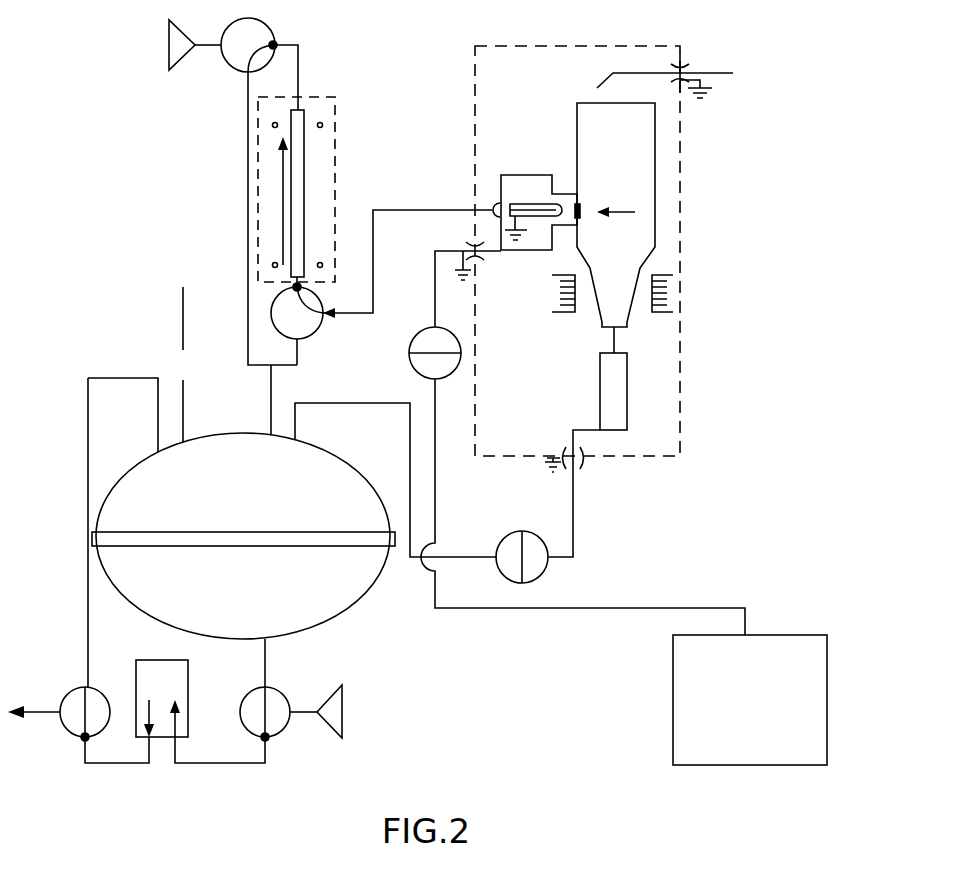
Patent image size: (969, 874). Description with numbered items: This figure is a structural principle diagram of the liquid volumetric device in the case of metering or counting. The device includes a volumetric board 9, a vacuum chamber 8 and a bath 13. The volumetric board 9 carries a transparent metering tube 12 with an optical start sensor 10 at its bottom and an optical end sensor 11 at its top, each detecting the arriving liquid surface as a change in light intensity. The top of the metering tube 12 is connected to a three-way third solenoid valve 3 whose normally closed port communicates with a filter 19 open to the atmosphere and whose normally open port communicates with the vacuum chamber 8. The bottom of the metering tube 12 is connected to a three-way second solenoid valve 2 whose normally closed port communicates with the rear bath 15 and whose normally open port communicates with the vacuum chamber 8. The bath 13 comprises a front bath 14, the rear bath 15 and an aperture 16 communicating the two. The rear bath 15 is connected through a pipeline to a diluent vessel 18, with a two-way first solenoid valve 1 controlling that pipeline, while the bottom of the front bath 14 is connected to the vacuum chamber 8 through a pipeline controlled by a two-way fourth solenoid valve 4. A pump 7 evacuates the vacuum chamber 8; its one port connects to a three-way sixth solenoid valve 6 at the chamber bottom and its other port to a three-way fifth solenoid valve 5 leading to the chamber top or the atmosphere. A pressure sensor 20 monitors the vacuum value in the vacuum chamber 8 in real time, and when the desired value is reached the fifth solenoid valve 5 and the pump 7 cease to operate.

The first solenoid valve 1 is at (435, 353).
The second solenoid valve 2 is at (315, 324).
The third solenoid valve 3 is at (242, 54).
The fourth solenoid valve 4 is at (522, 557).
The fifth solenoid valve 5 is at (59, 706).
The sixth solenoid valve 6 is at (291, 706).
The pump 7 is at (162, 698).
The vacuum chamber 8 is at (243, 536).
The volumetric board 9 is at (335, 97).
The start sensor 10 is at (273, 266).
The end sensor 11 is at (273, 126).
The metering tube 12 is at (335, 178).
The bath 13 is at (681, 237).
The front bath 14 is at (620, 187).
The rear bath 15 is at (560, 200).
The aperture 16 is at (577, 214).
The diluent vessel 18 is at (750, 700).
The filter 19 is at (182, 45).
The pressure sensor 20 is at (183, 364).